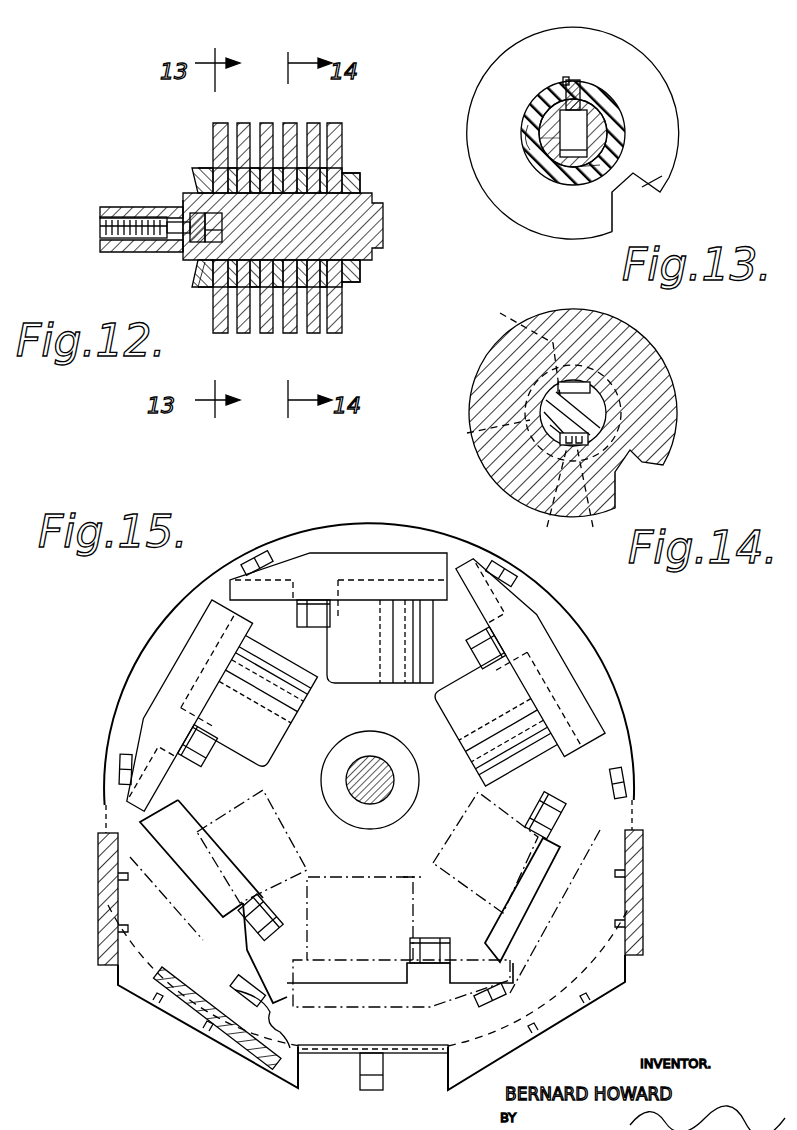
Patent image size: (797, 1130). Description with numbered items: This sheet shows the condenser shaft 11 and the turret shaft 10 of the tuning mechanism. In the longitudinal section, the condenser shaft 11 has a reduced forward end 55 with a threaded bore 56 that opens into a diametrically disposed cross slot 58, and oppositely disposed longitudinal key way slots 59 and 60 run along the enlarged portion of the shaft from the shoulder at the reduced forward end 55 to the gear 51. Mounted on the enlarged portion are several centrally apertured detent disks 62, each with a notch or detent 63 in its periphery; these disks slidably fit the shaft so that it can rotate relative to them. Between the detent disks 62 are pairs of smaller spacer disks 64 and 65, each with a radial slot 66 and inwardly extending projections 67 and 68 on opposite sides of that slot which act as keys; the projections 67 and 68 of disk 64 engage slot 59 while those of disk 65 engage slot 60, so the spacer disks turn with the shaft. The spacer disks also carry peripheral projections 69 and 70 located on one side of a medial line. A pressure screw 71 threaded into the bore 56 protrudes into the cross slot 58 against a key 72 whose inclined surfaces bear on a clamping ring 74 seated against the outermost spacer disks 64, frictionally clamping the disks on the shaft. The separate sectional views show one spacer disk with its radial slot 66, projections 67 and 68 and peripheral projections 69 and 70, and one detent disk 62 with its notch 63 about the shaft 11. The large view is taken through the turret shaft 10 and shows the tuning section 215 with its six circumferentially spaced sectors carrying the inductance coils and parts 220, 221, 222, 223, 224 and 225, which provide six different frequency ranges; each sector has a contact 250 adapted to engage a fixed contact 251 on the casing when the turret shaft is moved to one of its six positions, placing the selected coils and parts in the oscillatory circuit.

In FIG. 15, the turret shaft 10 is at (369, 805).
In FIG. 12, the condenser shaft 11 is at (358, 212).
In FIG. 13, the condenser shaft 11 is at (600, 134).
In FIG. 14, the condenser shaft 11 is at (557, 402).
In FIG. 12, the gear 51 is at (350, 182).
In FIG. 12, the reduced forward end 55 is at (123, 210).
In FIG. 12, the threaded bore 56 is at (102, 228).
In FIG. 12, the cross slot 58 is at (212, 240).
In FIG. 14, the longitudinal key way slot 59 is at (603, 378).
In FIG. 13, the longitudinal key way slot 60 is at (552, 150).
In FIG. 14, the longitudinal key way slot 60 is at (605, 412).
In FIG. 12, the detent disk 62 is at (318, 303).
In FIG. 13, the detent disk 62 is at (658, 95).
In FIG. 14, the detent disk 62 is at (577, 327).
In FIG. 13, the notch or detent 63 is at (642, 188).
In FIG. 14, the notch or detent 63 is at (642, 465).
In FIG. 12, the spacer disk 64 is at (205, 175).
In FIG. 12, the spacer disk 65 is at (254, 168).
In FIG. 13, the spacer disk 65 is at (589, 77).
In FIG. 14, the spacer disk 65 is at (483, 442).
In FIG. 13, the radial slot 66 is at (580, 84).
In FIG. 13, the inwardly extending projection 67 is at (550, 118).
In FIG. 14, the inwardly extending projection 67 is at (552, 497).
In FIG. 13, the inwardly extending projection 68 is at (583, 112).
In FIG. 14, the inwardly extending projection 68 is at (587, 443).
In FIG. 13, the peripheral projection 69 is at (567, 78).
In FIG. 14, the peripheral projection 69 is at (515, 349).
In FIG. 13, the peripheral projection 70 is at (571, 194).
In FIG. 14, the peripheral projection 70 is at (596, 497).
In FIG. 12, the pressure screw 71 is at (182, 215).
In FIG. 12, the key 72 is at (193, 222).
In FIG. 12, the clamping ring 74 is at (201, 290).
In FIG. 15, the tuning section 215 is at (282, 548).
In FIG. 15, the inductance coils and parts 220 is at (225, 685).
In FIG. 15, the inductance coils and parts 221 is at (368, 635).
In FIG. 15, the inductance coils and parts 222 is at (505, 690).
In FIG. 15, the inductance coils and parts 223 is at (643, 908).
In FIG. 15, the inductance coils and parts 224 is at (372, 950).
In FIG. 15, the inductance coils and parts 225 is at (225, 852).
In FIG. 15, the contact 250 is at (118, 785).
In FIG. 15, the fixed contact 251 is at (232, 1035).